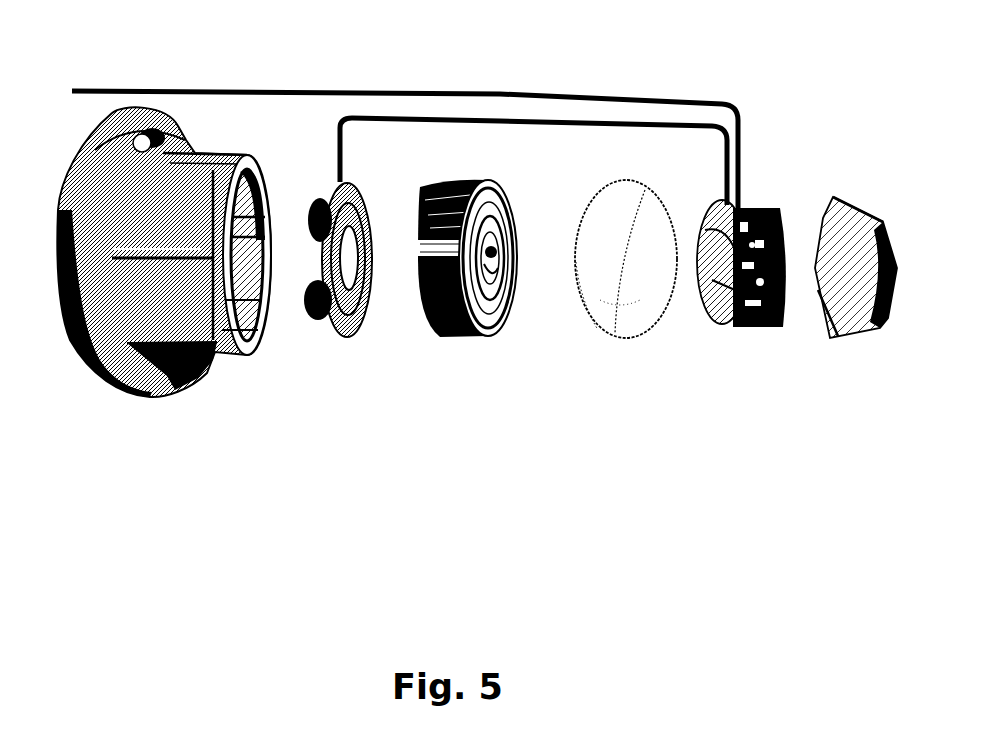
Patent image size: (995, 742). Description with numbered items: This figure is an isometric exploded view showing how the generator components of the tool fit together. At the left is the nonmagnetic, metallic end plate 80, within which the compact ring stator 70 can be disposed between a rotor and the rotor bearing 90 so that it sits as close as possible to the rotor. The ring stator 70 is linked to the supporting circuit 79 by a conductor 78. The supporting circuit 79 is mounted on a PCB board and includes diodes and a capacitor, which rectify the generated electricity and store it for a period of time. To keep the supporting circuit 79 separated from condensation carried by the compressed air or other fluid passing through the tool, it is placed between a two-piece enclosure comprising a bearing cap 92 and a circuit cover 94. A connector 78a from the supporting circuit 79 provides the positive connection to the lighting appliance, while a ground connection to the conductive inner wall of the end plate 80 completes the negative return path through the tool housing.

The end plate 80 is at (143, 392).
The ring stator 70 is at (338, 333).
The rotor bearing 90 is at (468, 335).
The bearing cap 92 is at (608, 337).
The supporting circuit 79 is at (727, 322).
The circuit cover 94 is at (827, 333).
The conductor 78 is at (542, 120).
The connector 78a is at (732, 107).